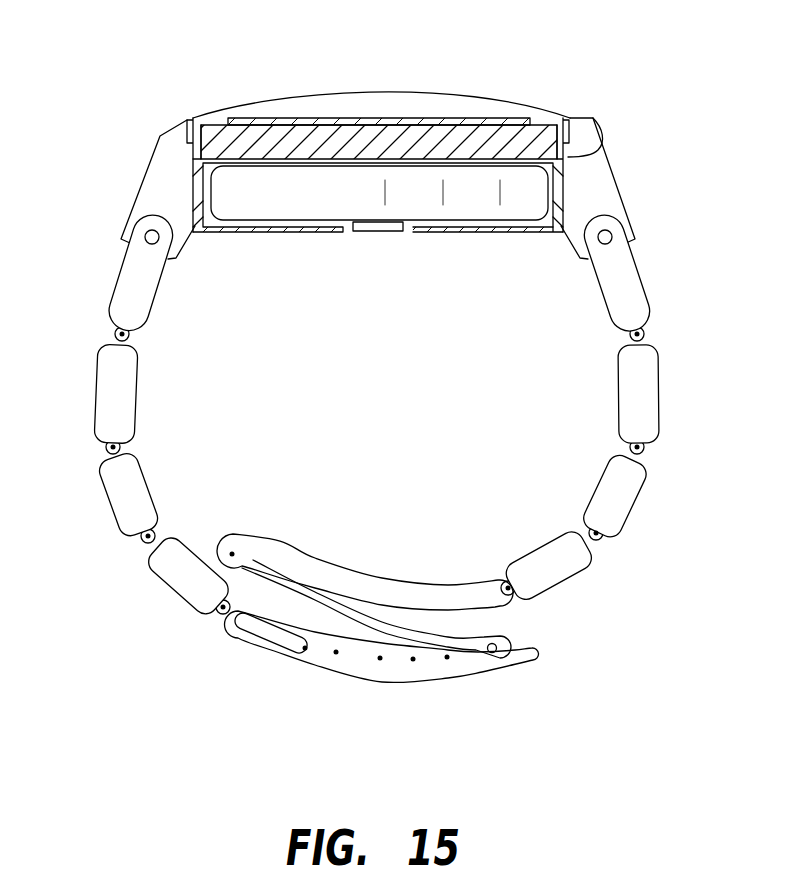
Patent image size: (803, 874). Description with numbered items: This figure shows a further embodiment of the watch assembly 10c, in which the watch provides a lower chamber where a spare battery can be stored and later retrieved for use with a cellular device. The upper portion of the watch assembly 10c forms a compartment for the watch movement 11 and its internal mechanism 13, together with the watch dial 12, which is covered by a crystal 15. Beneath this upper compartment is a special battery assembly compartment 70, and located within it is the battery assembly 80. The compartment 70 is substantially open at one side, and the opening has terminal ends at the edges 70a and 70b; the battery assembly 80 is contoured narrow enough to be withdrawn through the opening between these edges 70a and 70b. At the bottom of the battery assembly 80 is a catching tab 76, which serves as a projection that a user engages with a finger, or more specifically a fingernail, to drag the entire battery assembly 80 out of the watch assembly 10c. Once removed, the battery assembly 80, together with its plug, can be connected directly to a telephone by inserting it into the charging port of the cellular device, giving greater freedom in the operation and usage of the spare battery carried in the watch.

The watch assembly 10c is at (110, 108).
The watch movement 11 is at (585, 92).
The watch dial 12 is at (468, 118).
The internal mechanism 13 is at (530, 147).
The crystal 15 is at (278, 96).
The battery assembly compartment 70 is at (193, 203).
The terminal end of compartment opening 70a is at (190, 181).
The terminal end of compartment opening 70b is at (560, 190).
The catching tab 76 is at (378, 233).
The battery assembly 80 is at (517, 196).